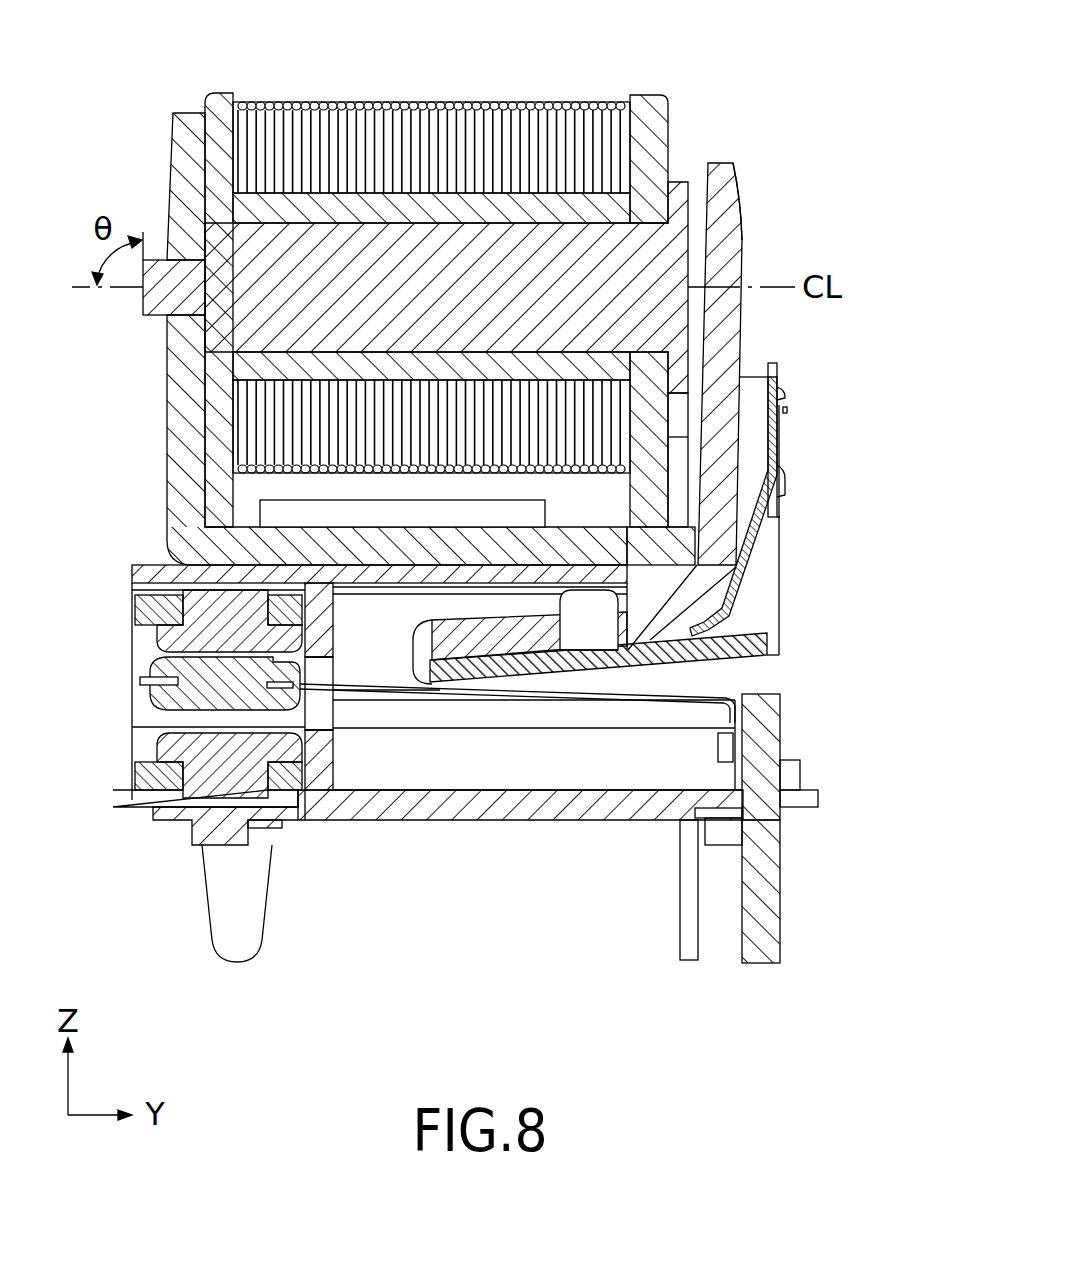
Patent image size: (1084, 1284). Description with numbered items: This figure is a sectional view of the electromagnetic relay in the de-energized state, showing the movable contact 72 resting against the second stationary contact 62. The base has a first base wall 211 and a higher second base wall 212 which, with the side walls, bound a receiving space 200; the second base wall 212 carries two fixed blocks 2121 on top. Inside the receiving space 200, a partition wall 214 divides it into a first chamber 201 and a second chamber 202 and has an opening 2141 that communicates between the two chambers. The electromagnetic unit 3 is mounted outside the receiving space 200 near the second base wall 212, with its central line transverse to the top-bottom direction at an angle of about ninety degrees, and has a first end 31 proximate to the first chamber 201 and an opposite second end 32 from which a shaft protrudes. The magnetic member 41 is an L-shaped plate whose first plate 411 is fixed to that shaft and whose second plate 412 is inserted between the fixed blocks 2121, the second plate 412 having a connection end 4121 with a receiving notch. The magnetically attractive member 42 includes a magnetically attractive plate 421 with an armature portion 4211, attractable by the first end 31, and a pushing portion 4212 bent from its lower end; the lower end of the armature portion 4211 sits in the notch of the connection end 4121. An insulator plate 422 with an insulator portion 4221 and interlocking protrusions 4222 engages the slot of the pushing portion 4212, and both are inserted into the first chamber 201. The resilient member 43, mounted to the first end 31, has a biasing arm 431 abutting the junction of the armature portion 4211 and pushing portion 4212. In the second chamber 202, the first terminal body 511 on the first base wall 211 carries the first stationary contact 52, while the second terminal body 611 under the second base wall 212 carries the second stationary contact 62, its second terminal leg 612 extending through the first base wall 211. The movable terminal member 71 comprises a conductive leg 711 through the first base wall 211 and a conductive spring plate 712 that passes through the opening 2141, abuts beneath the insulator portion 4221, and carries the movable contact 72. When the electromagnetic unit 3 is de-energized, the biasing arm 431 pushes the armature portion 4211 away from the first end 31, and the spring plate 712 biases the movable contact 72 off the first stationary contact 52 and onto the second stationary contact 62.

The electromagnetic unit 3 is at (456, 88).
The first end 31 is at (676, 180).
The second end 32 is at (157, 258).
The magnetic member 41 is at (503, 294).
The first plate 411 is at (167, 352).
The second plate 412 is at (792, 546).
The connection end 4121 is at (680, 542).
The magnetically attractive member 42 is at (764, 380).
The magnetically attractive plate 421 is at (747, 406).
The armature portion 4211 is at (720, 250).
The pushing portion 4212 is at (490, 633).
The insulator plate 422 is at (745, 637).
The insulator portion 4221 is at (518, 690).
The interlocking protrusions 4222 is at (598, 625).
The resilient member 43 is at (783, 445).
The biasing arm 431 is at (740, 650).
The receiving space 200 is at (487, 782).
The first chamber 201 is at (565, 772).
The second chamber 202 is at (150, 718).
The first base wall 211 is at (310, 800).
The second base wall 212 is at (150, 572).
The fixed blocks 2121 is at (280, 513).
The partition wall 214 is at (313, 750).
The opening 2141 is at (320, 667).
The first terminal body 511 is at (205, 790).
The first stationary contact 52 is at (162, 747).
The second terminal body 611 is at (223, 602).
The second terminal leg 612 is at (235, 965).
The second stationary contact 62 is at (168, 642).
The movable terminal member 71 is at (775, 828).
The conductive leg 711 is at (762, 928).
The conductive spring plate 712 is at (440, 690).
The movable contact 72 is at (160, 690).